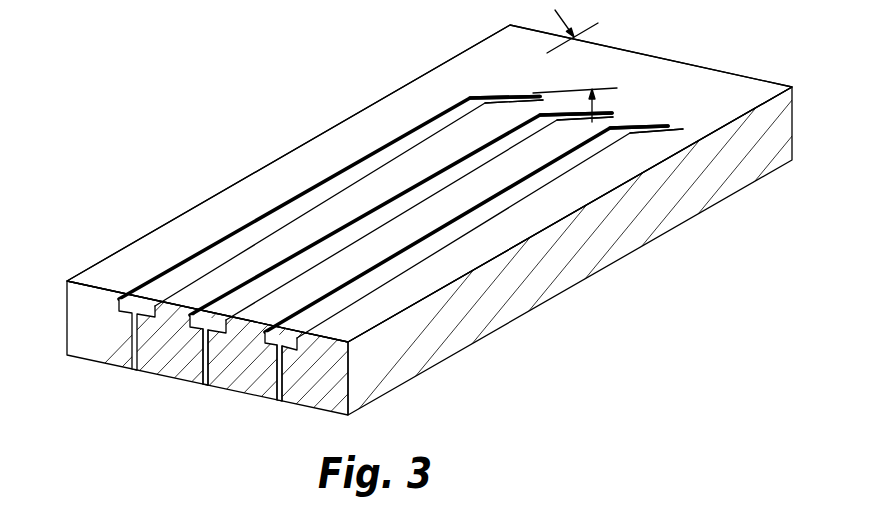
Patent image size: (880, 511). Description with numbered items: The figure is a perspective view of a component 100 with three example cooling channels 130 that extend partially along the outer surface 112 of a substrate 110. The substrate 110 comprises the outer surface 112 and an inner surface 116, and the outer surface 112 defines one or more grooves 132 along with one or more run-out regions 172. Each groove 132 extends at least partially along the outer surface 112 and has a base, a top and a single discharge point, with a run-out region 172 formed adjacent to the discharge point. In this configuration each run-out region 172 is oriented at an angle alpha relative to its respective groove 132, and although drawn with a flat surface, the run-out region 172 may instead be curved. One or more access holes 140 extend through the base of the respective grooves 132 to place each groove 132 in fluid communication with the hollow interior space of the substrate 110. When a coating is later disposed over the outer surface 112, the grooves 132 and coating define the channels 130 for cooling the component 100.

The component 100 is at (211, 76).
The substrate 110 is at (717, 177).
The outer surface 112 is at (151, 250).
The inner surface 116 is at (213, 385).
The channel 130 is at (196, 334).
The groove 132 is at (263, 343).
The access hole 140 is at (275, 393).
The run-out region 172 is at (642, 128).